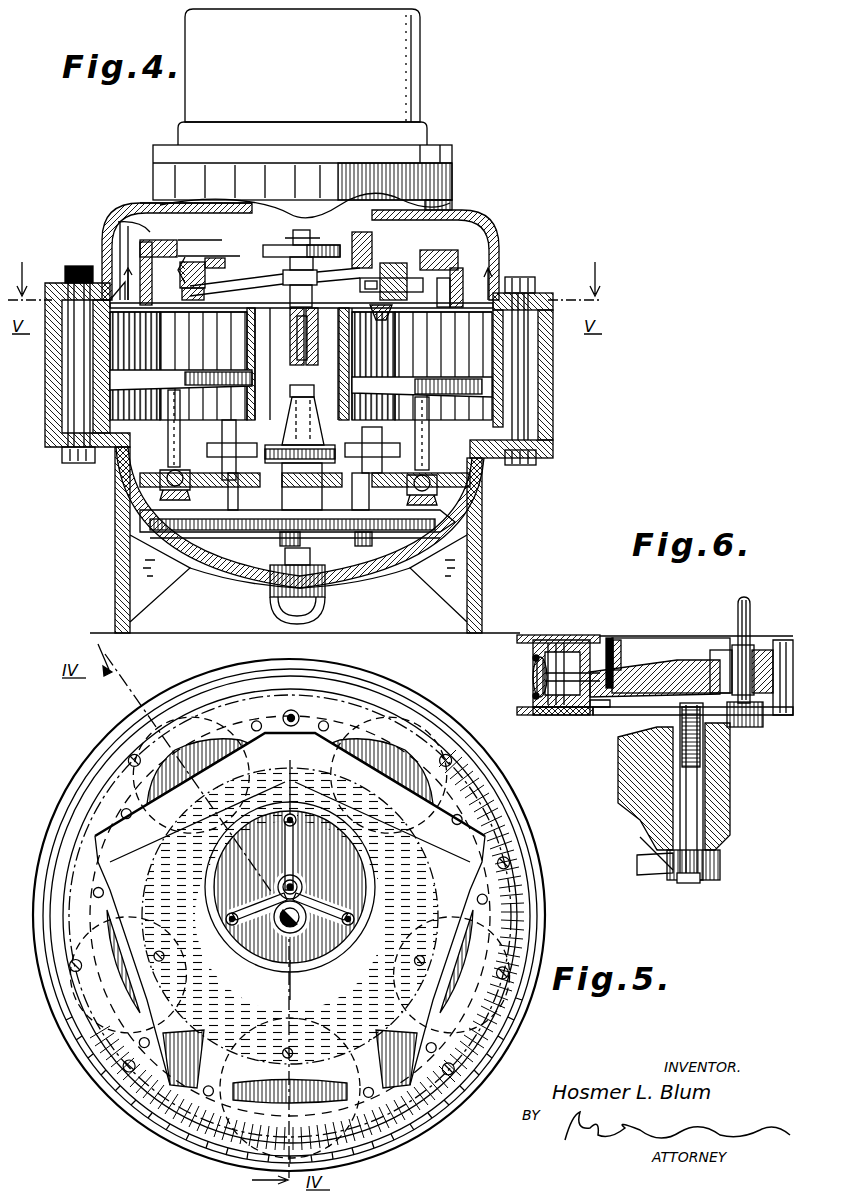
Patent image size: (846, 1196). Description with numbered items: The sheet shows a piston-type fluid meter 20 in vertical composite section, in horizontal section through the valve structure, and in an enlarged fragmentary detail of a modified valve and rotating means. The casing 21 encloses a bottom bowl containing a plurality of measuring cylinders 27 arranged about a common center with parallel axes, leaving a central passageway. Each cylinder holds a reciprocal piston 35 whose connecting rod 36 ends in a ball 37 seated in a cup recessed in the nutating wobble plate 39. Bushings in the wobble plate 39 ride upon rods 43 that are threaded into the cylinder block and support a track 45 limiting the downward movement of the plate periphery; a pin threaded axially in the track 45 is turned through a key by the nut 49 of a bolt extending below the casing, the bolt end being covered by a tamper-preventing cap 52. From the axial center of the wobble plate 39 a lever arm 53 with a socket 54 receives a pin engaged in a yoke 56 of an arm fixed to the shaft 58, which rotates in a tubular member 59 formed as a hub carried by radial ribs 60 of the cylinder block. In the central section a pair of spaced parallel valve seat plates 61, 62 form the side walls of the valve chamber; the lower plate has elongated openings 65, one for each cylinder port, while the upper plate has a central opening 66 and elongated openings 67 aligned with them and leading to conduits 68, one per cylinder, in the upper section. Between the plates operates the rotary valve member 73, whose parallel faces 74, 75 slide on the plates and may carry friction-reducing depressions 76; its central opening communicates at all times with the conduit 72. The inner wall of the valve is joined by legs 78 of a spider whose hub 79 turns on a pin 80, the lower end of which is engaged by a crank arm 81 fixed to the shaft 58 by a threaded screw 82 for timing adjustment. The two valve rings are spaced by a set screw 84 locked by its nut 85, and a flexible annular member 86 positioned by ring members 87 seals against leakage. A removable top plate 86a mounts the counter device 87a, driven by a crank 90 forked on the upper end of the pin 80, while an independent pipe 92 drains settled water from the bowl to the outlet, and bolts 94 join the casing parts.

In FIG. 4, the meter 20 is at (509, 212).
In FIG. 5, the meter 20 is at (558, 930).
In FIG. 5, the casing 21 is at (533, 1015).
In FIG. 4, the cylinders 27 is at (485, 366).
In FIG. 5, the cylinders 27 is at (440, 906).
In FIG. 4, the piston 35 is at (152, 382).
In FIG. 4, the connecting rod 36 is at (182, 412).
In FIG. 4, the ball 37 is at (440, 487).
In FIG. 4, the wobble plate 39 is at (148, 464).
In FIG. 4, the rods 43 is at (362, 497).
In FIG. 4, the track 45 is at (458, 522).
In FIG. 4, the nut 49 is at (285, 548).
In FIG. 4, the cap 52 is at (322, 612).
In FIG. 4, the lever arm 53 is at (290, 420).
In FIG. 4, the socket 54 is at (312, 418).
In FIG. 6, the yoke 56 is at (638, 866).
In FIG. 6, the shaft 58 is at (705, 818).
In FIG. 4, the tubular member 59 is at (306, 350).
In FIG. 6, the tubular member 59 is at (732, 777).
In FIG. 4, the ribs 60 is at (290, 340).
In FIG. 6, the ribs 60 is at (620, 776).
In FIG. 4, the valve seat plate 61 is at (460, 258).
In FIG. 4, the valve seat plate 62 is at (440, 318).
In FIG. 5, the valve seat plate 62 is at (240, 1040).
In FIG. 4, the openings 65 is at (214, 296).
In FIG. 5, the openings 65 is at (390, 990).
In FIG. 4, the central opening 66 is at (240, 268).
In FIG. 4, the openings 67 is at (166, 254).
In FIG. 4, the conduits 68 is at (222, 212).
In FIG. 4, the conduit 72 is at (140, 240).
In FIG. 4, the valve member 73 is at (428, 283).
In FIG. 6, the valve member 73 is at (585, 716).
In FIG. 5, the valve member 73 is at (262, 797).
In FIG. 4, the valve face 74 is at (402, 262).
In FIG. 6, the valve face 74 is at (568, 642).
In FIG. 4, the valve face 75 is at (388, 320).
In FIG. 6, the valve face 75 is at (545, 716).
In FIG. 6, the depressions 76 is at (540, 638).
In FIG. 6, the legs 78 is at (675, 660).
In FIG. 6, the hub 79 is at (780, 650).
In FIG. 6, the pin 80 is at (742, 645).
In FIG. 5, the pin 80 is at (280, 892).
In FIG. 6, the crank arm 81 is at (765, 726).
In FIG. 6, the threaded screw 82 is at (668, 672).
In FIG. 5, the threaded screw 82 is at (293, 930).
In FIG. 6, the set screw 84 is at (608, 640).
In FIG. 6, the nut 85 is at (620, 642).
In FIG. 6, the flexible annular member 86 is at (534, 676).
In FIG. 4, the top plate 86a is at (452, 160).
In FIG. 6, the ring members 87 is at (530, 658).
In FIG. 4, the counter device 87a is at (326, 69).
In FIG. 4, the crank 90 is at (322, 250).
In FIG. 5, the pipe 92 is at (300, 712).
In FIG. 4, the bolts 94 is at (520, 360).
In FIG. 5, the bolts 94 is at (452, 763).